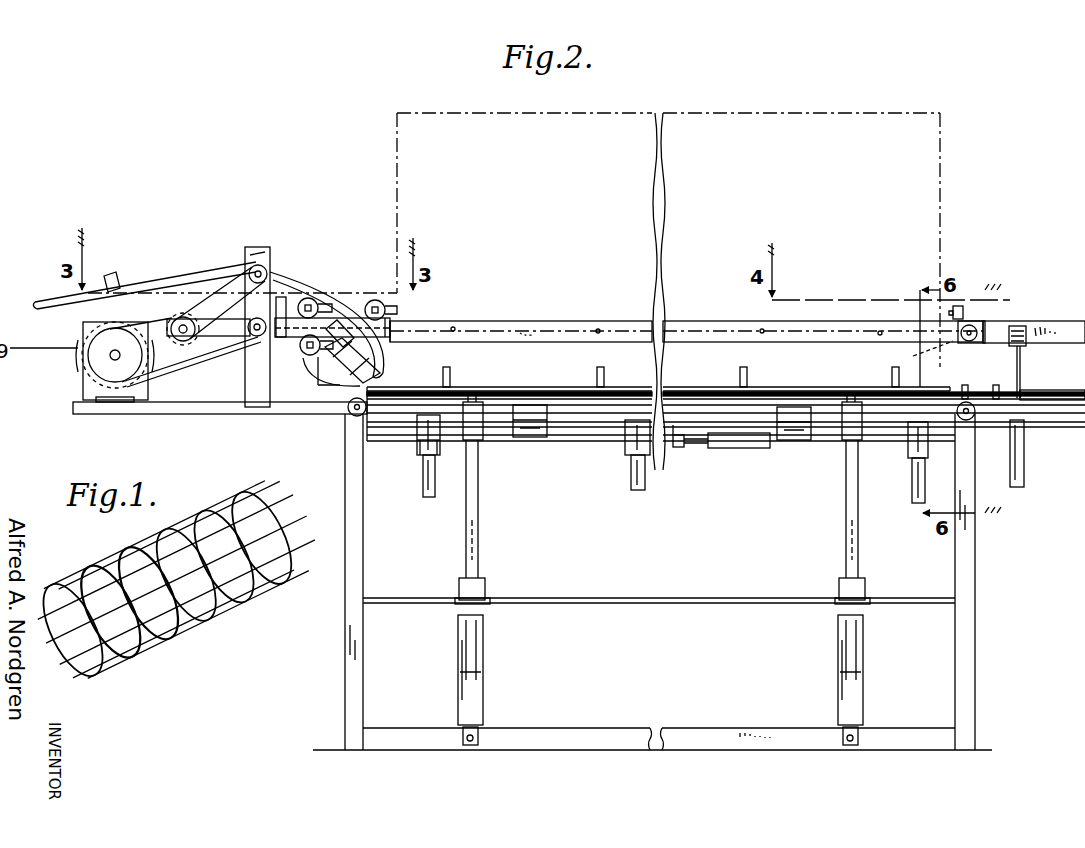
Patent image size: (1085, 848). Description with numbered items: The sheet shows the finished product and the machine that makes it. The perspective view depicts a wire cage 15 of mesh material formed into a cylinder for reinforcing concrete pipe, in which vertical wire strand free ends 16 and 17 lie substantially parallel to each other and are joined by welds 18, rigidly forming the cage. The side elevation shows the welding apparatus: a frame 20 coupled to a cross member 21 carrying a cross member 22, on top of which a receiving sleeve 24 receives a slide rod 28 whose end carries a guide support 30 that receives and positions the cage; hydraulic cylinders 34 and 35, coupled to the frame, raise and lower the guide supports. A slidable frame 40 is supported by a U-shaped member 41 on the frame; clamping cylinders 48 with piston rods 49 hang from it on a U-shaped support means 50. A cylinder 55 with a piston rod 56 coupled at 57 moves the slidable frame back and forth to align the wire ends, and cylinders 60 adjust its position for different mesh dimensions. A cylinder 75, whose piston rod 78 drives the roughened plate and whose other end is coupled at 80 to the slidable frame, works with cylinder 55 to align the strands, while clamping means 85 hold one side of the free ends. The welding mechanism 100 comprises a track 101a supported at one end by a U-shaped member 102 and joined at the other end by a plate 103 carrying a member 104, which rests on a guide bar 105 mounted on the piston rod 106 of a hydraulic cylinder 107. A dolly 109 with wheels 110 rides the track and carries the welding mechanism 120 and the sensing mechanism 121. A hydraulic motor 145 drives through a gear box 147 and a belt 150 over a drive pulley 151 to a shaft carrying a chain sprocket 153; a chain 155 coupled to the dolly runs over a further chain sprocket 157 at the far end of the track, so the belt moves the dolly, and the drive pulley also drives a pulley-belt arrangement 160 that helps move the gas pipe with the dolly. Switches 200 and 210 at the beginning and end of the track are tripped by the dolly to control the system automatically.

In FIG. 2, the wire cage 15 is at (800, 113).
In FIG. 1, the wire cage 15 is at (199, 630).
In FIG. 1, the vertical wire strand free end 16 is at (126, 600).
In FIG. 1, the vertical wire strand free end 17 is at (152, 640).
In FIG. 1, the welds 18 is at (131, 568).
In FIG. 2, the frame 20 is at (358, 662).
In FIG. 2, the cross member 21 is at (622, 606).
In FIG. 2, the cross member 22 is at (486, 600).
In FIG. 2, the receiving sleeve 24 is at (460, 590).
In FIG. 2, the slide rod 28 is at (480, 522).
In FIG. 2, the guide support 30 is at (840, 387).
In FIG. 2, the hydraulic cylinder 34 is at (473, 702).
In FIG. 2, the hydraulic cylinder 35 is at (845, 699).
In FIG. 2, the slidable frame 40 is at (324, 421).
In FIG. 2, the U-shaped member 41 is at (530, 438).
In FIG. 2, the hydraulic cylinder 48 is at (428, 498).
In FIG. 2, the piston rod 49 is at (420, 442).
In FIG. 2, the U-shaped support means 50 is at (437, 442).
In FIG. 2, the cylinder 55 is at (1050, 392).
In FIG. 2, the piston rod 56 is at (995, 386).
In FIG. 2, the coupling point 57 is at (965, 386).
In FIG. 2, the cylinder 60 is at (355, 416).
In FIG. 2, the cylinder 75 is at (741, 449).
In FIG. 2, the piston rod 78 is at (703, 445).
In FIG. 2, the coupling point 80 is at (678, 448).
In FIG. 2, the clamping means 85 is at (449, 368).
In FIG. 2, the welding mechanism 100 is at (355, 294).
In FIG. 2, the track 101a is at (578, 324).
In FIG. 2, the U-shaped member 102 is at (268, 259).
In FIG. 2, the plate 103 is at (985, 329).
In FIG. 2, the member 104 is at (1058, 327).
In FIG. 2, the guide bar 105 is at (1040, 321).
In FIG. 2, the piston rod 106 is at (1021, 366).
In FIG. 2, the hydraulic cylinder 107 is at (1025, 463).
In FIG. 2, the dolly 109 is at (390, 320).
In FIG. 2, the wheels 110 is at (287, 300).
In FIG. 2, the welding mechanism 120 is at (386, 359).
In FIG. 2, the sensing mechanism 121 is at (350, 372).
In FIG. 2, the hydraulic motor 145 is at (100, 362).
In FIG. 2, the gear box 147 is at (92, 323).
In FIG. 2, the belt 150 is at (186, 368).
In FIG. 2, the drive pulley 151 is at (176, 336).
In FIG. 2, the chain sprocket 153 is at (249, 333).
In FIG. 2, the chain 155 is at (528, 335).
In FIG. 2, the chain sprocket 157 is at (915, 356).
In FIG. 2, the pulley-belt arrangement 160 is at (218, 284).
In FIG. 2, the switch 200 is at (282, 297).
In FIG. 2, the switch 210 is at (952, 312).